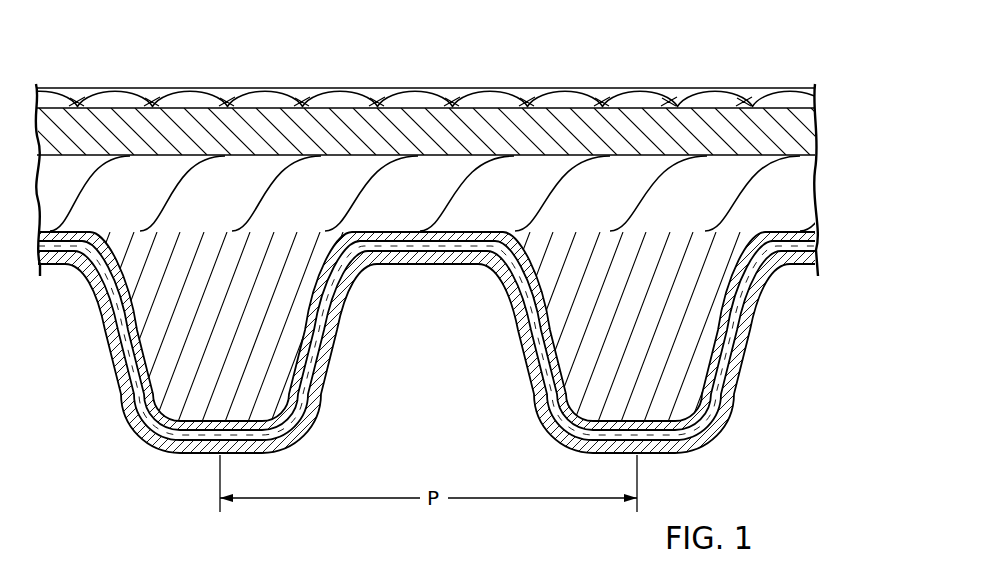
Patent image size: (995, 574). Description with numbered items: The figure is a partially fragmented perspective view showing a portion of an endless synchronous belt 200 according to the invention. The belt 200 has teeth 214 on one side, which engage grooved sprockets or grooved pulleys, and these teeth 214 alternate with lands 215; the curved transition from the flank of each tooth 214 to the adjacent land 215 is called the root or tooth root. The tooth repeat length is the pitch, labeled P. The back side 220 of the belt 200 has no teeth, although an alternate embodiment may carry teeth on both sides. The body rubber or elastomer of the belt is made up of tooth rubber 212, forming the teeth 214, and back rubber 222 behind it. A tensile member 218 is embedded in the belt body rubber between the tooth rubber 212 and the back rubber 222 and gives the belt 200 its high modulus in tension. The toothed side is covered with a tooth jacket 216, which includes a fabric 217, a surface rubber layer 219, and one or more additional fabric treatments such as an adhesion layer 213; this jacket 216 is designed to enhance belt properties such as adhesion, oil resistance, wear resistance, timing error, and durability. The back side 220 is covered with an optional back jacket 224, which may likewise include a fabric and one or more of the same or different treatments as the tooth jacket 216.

The synchronous belt 200 is at (578, 36).
The tooth rubber 212 is at (175, 352).
The adhesion layer 213 is at (745, 372).
The teeth 214 is at (518, 337).
The lands 215 is at (413, 262).
The tooth jacket 216 is at (822, 232).
The fabric 217 is at (730, 408).
The tensile member 218 is at (135, 173).
The surface rubber layer 219 is at (703, 433).
The back side 220 is at (692, 88).
The back rubber 222 is at (248, 130).
The back jacket 224 is at (380, 97).